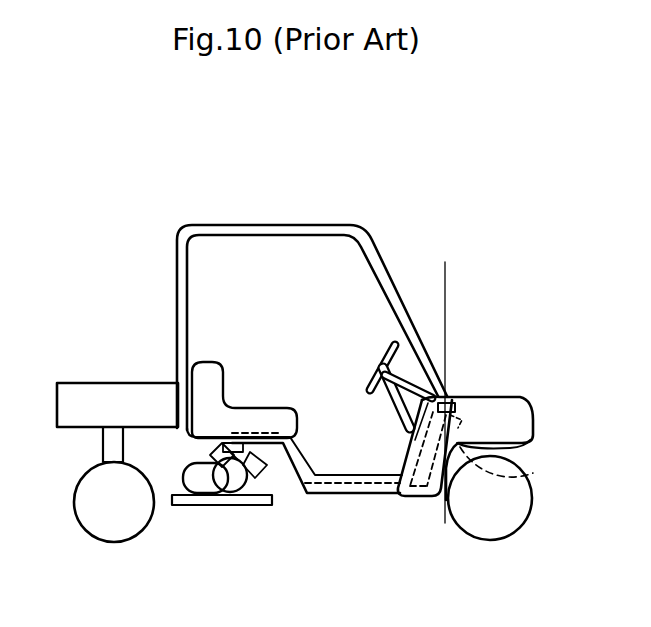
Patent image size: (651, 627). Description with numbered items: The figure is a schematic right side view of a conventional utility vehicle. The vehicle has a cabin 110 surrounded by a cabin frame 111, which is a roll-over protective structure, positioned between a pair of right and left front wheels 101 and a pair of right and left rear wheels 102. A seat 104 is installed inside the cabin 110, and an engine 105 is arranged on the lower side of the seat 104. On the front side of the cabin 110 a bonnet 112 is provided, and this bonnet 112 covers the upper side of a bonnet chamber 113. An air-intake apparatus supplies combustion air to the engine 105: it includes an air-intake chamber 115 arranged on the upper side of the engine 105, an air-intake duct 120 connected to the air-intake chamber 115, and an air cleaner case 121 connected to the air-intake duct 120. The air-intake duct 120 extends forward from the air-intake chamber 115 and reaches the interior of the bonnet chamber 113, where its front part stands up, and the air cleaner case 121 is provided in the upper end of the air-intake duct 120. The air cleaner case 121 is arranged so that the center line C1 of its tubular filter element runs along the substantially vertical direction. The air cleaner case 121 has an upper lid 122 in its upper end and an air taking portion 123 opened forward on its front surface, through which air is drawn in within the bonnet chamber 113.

The front wheels 101 is at (510, 510).
The rear wheels 102 is at (125, 507).
The seat 104 is at (258, 425).
The engine 105 is at (233, 483).
The cabin 110 is at (262, 348).
The cabin frame 111 is at (178, 238).
The bonnet 112 is at (510, 410).
The bonnet chamber 113 is at (483, 426).
The air-intake chamber 115 is at (253, 470).
The air-intake duct 120 is at (363, 485).
The air cleaner case 121 is at (533, 473).
The upper lid 122 is at (450, 397).
The air taking portion 123 is at (458, 418).
The center line C1 is at (447, 315).